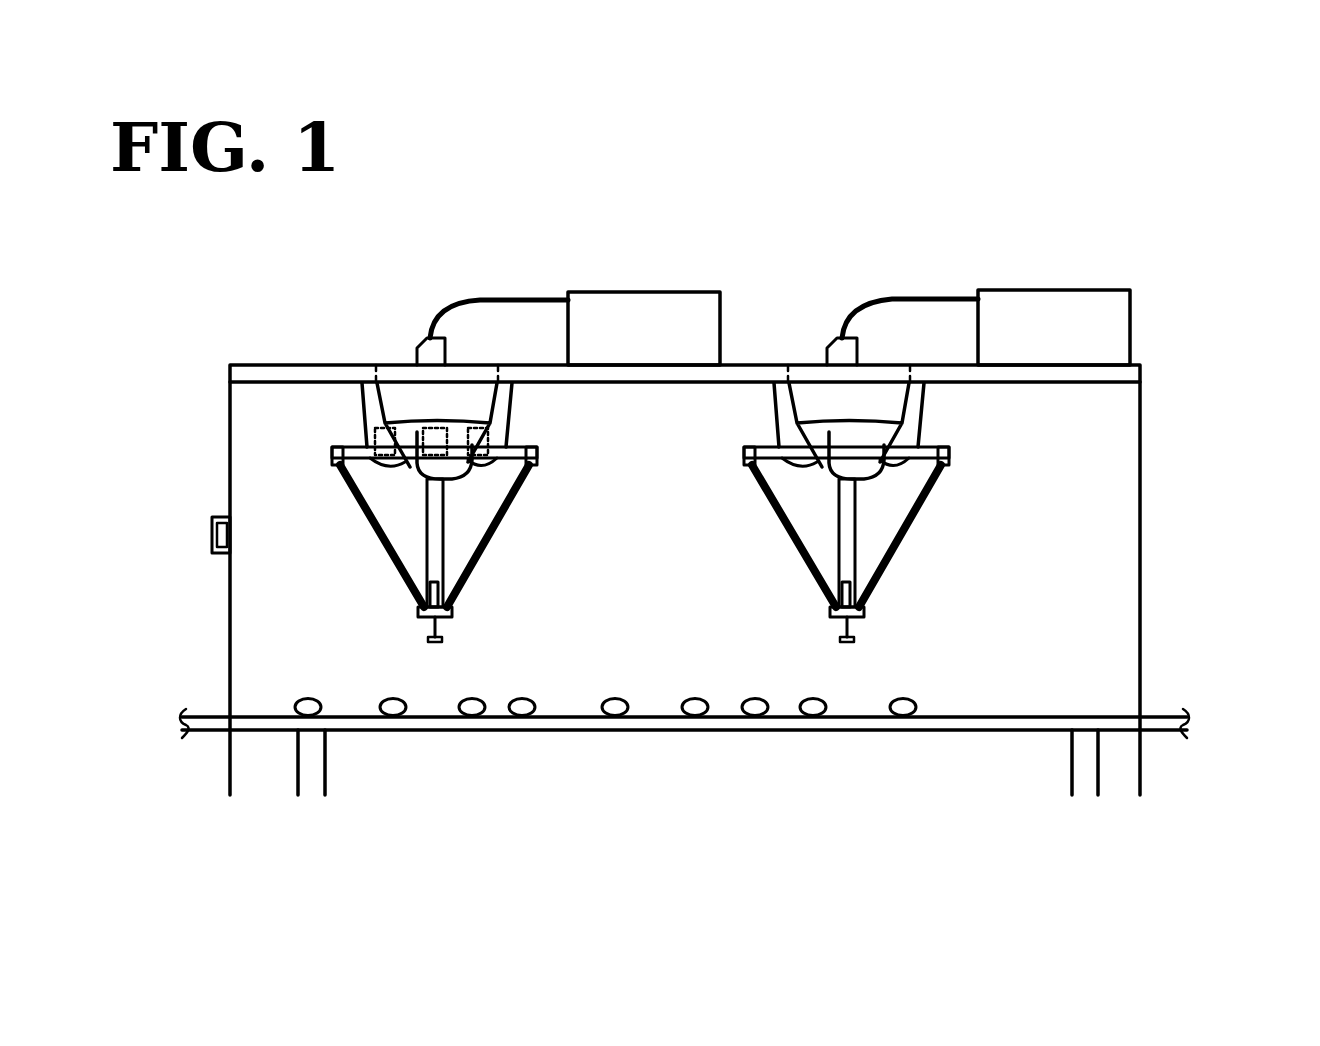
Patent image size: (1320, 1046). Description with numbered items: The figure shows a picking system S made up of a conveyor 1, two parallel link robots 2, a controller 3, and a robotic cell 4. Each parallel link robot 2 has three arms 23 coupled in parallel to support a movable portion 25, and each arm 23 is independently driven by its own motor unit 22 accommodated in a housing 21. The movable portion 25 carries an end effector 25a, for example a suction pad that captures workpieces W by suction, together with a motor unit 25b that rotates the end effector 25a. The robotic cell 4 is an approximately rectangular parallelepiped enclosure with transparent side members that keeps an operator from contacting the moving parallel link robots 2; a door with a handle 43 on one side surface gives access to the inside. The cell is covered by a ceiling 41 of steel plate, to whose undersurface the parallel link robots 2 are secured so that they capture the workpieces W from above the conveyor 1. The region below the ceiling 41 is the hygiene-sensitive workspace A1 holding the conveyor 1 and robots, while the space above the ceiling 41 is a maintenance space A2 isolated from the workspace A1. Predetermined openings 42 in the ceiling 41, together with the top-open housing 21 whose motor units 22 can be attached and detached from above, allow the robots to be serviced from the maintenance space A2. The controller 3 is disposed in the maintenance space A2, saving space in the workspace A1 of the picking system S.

The conveyor 1 is at (258, 717).
The parallel link robot 2 is at (648, 524).
The controller 3 is at (645, 292).
The robotic cell 4 is at (1140, 565).
The housing 21 is at (370, 400).
The motor unit 22 is at (375, 440).
The arm 23 is at (353, 503).
The movable portion 25 is at (450, 622).
The end effector 25a is at (432, 630).
The motor unit 25b is at (438, 590).
The ceiling 41 is at (253, 365).
The opening 42 is at (402, 346).
The handle 43 is at (212, 535).
The workspace A1 is at (1118, 460).
The maintenance space A2 is at (1138, 164).
The picking system S is at (1260, 190).
The workpiece W is at (615, 698).